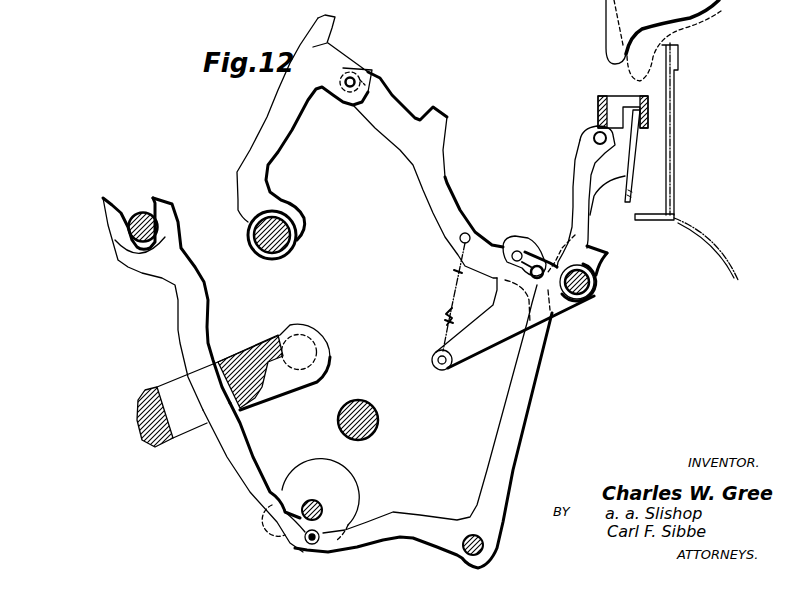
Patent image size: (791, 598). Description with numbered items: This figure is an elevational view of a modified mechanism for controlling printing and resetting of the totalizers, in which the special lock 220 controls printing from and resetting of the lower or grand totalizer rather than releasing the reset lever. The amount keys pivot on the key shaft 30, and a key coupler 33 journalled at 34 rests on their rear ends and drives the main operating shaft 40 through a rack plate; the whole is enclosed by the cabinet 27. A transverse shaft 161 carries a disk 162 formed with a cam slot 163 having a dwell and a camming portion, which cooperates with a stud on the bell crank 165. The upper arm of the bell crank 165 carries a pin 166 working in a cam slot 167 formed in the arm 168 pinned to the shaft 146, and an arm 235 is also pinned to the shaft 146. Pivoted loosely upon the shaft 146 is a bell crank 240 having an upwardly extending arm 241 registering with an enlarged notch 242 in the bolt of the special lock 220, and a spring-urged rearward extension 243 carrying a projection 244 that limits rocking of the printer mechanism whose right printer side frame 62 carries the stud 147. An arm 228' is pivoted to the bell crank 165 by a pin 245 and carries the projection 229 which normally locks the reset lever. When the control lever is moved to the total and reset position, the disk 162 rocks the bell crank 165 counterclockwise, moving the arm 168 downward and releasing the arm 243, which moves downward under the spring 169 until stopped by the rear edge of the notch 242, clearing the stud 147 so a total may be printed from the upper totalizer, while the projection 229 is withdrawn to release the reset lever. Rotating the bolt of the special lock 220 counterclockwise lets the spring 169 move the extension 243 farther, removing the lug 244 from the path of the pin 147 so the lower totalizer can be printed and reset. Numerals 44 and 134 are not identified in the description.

The right printer side frame 62 is at (328, 43).
The stud 147 is at (357, 77).
The projection 244 is at (440, 113).
The rearward extension 243 is at (455, 220).
The pivot shaft 44 is at (285, 215).
The projection 229 is at (103, 198).
The main operating shaft 40 is at (115, 240).
The key coupler 33 is at (245, 352).
The key coupler pivot 34 is at (312, 330).
The key shaft 30 is at (366, 402).
The arm 228' is at (233, 385).
The cam slot 163 is at (253, 477).
The transverse shaft 161 is at (315, 505).
The disk 162 is at (338, 500).
The pin 245 is at (303, 552).
The spring 169 is at (450, 292).
The cam slot 167 is at (517, 250).
The pin 166 is at (540, 263).
The bell crank 240 is at (603, 258).
The shaft 146 is at (598, 294).
The arm 168 is at (563, 307).
The bell crank 165 is at (530, 347).
The enlarged notch 242 is at (634, 116).
The frame member 134 is at (670, 143).
The upwardly extending arm 241 is at (608, 190).
The cabinet 27 is at (708, 232).
The special lock 220 is at (598, 102).
The arm 235 is at (607, 27).